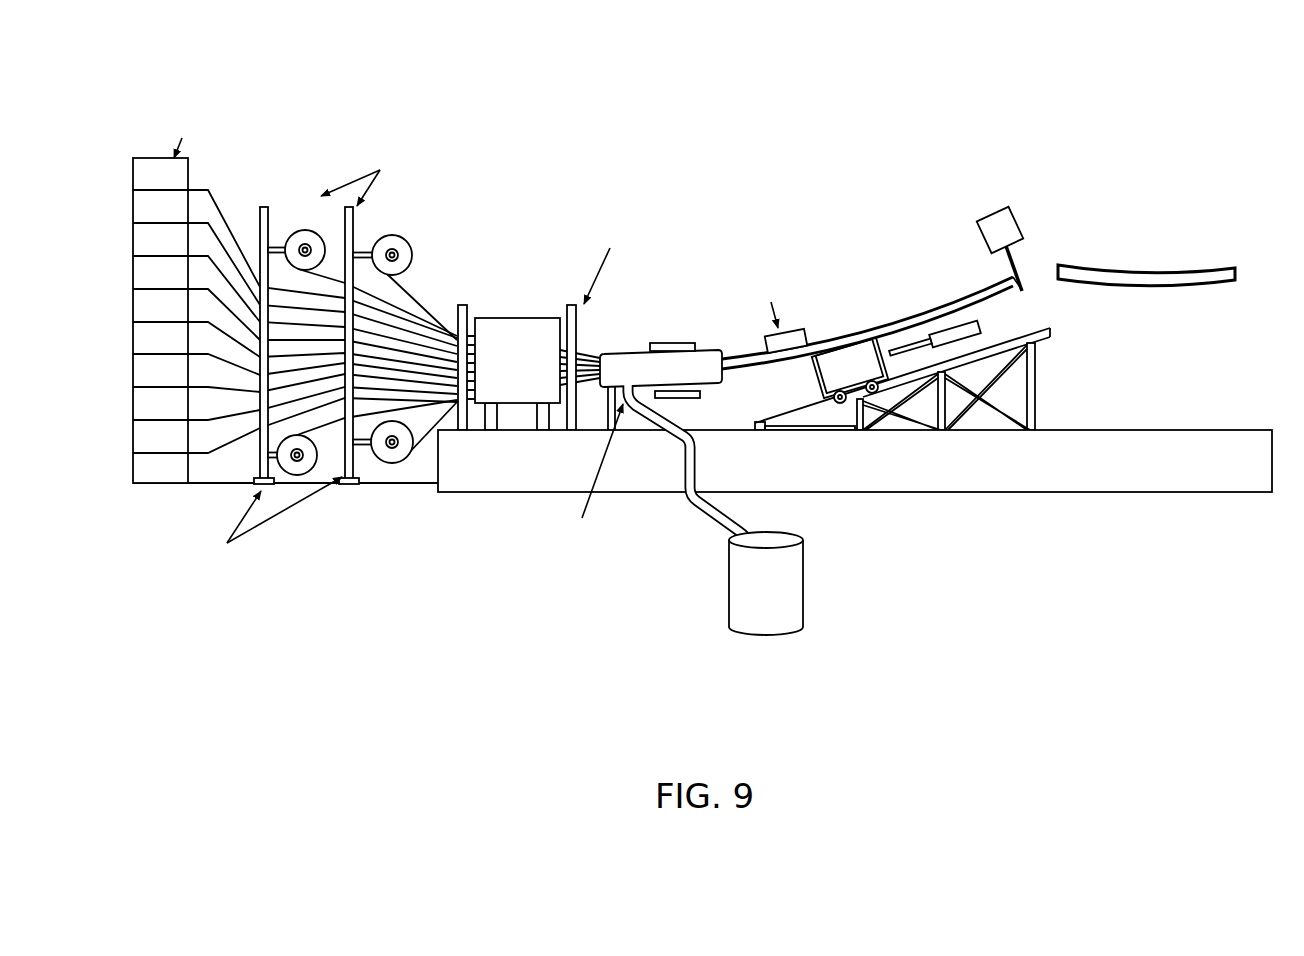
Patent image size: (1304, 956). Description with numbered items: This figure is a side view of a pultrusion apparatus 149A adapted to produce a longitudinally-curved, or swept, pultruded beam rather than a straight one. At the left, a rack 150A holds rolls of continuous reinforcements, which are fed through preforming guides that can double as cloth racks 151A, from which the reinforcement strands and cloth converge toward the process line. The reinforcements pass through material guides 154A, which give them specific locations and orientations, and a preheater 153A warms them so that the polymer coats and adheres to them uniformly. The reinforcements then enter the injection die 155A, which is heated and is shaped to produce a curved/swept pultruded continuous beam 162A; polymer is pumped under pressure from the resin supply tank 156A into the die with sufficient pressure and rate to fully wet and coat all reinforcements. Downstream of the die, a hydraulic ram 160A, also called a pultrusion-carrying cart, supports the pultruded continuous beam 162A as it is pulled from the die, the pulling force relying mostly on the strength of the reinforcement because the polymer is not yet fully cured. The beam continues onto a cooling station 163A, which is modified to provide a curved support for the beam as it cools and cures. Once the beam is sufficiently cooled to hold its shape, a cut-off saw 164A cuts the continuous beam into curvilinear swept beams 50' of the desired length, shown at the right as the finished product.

The pultrusion apparatus 149A is at (497, 138).
The rack 150A is at (131, 207).
The cloth racks 151A is at (302, 232).
The preheater 153A is at (502, 326).
The material guide 154A is at (566, 309).
The injection die 155A is at (630, 359).
The resin supply tank 156A is at (733, 583).
The hydraulic ram 160A is at (853, 359).
The pultruded continuous beam 162A is at (840, 343).
The cooling station 163A is at (888, 472).
The cut-off saw 164A is at (1008, 223).
The curvilinear swept beam 50' is at (1146, 277).